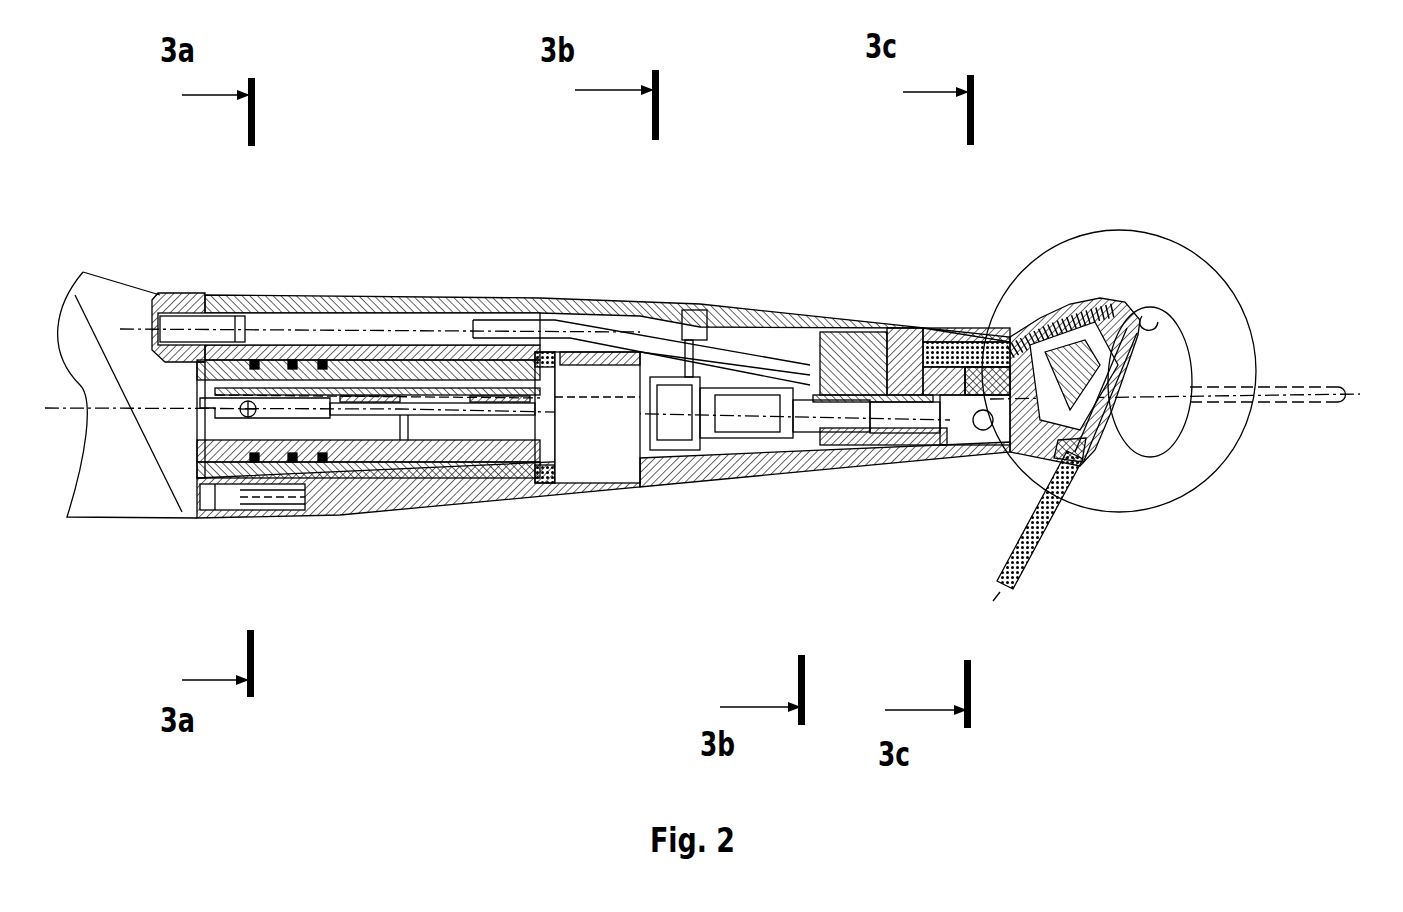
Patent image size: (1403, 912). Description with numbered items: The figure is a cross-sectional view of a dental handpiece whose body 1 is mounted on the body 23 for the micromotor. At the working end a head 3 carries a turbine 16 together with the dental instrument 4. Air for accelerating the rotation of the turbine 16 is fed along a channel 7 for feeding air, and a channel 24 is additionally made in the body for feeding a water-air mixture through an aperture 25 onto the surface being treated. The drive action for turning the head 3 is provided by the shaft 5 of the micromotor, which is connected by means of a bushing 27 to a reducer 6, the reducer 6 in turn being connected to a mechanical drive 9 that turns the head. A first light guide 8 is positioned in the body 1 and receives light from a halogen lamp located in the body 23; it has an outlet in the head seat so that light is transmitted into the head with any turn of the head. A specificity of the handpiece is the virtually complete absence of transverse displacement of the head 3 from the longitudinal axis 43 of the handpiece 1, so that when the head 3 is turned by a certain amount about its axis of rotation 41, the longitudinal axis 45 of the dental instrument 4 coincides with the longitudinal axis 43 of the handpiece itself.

The body 1 is at (450, 503).
The head 3 is at (1153, 402).
The dental instrument 4 is at (1067, 606).
The shaft 5 is at (215, 403).
The reducer 6 is at (587, 378).
The channel for feeding air 7 is at (702, 352).
The first light guide 8 is at (1070, 330).
The mechanical drive 9 is at (928, 455).
The turbine 16 is at (1140, 310).
The body for the micromotor 23 is at (130, 490).
The channel 24 is at (803, 353).
The aperture 25 is at (883, 534).
The bushing 27 is at (337, 423).
The axis of rotation 41 is at (1187, 372).
The longitudinal axis of the handpiece 43 is at (887, 395).
The longitudinal axis of the dental instrument 45 is at (1078, 450).